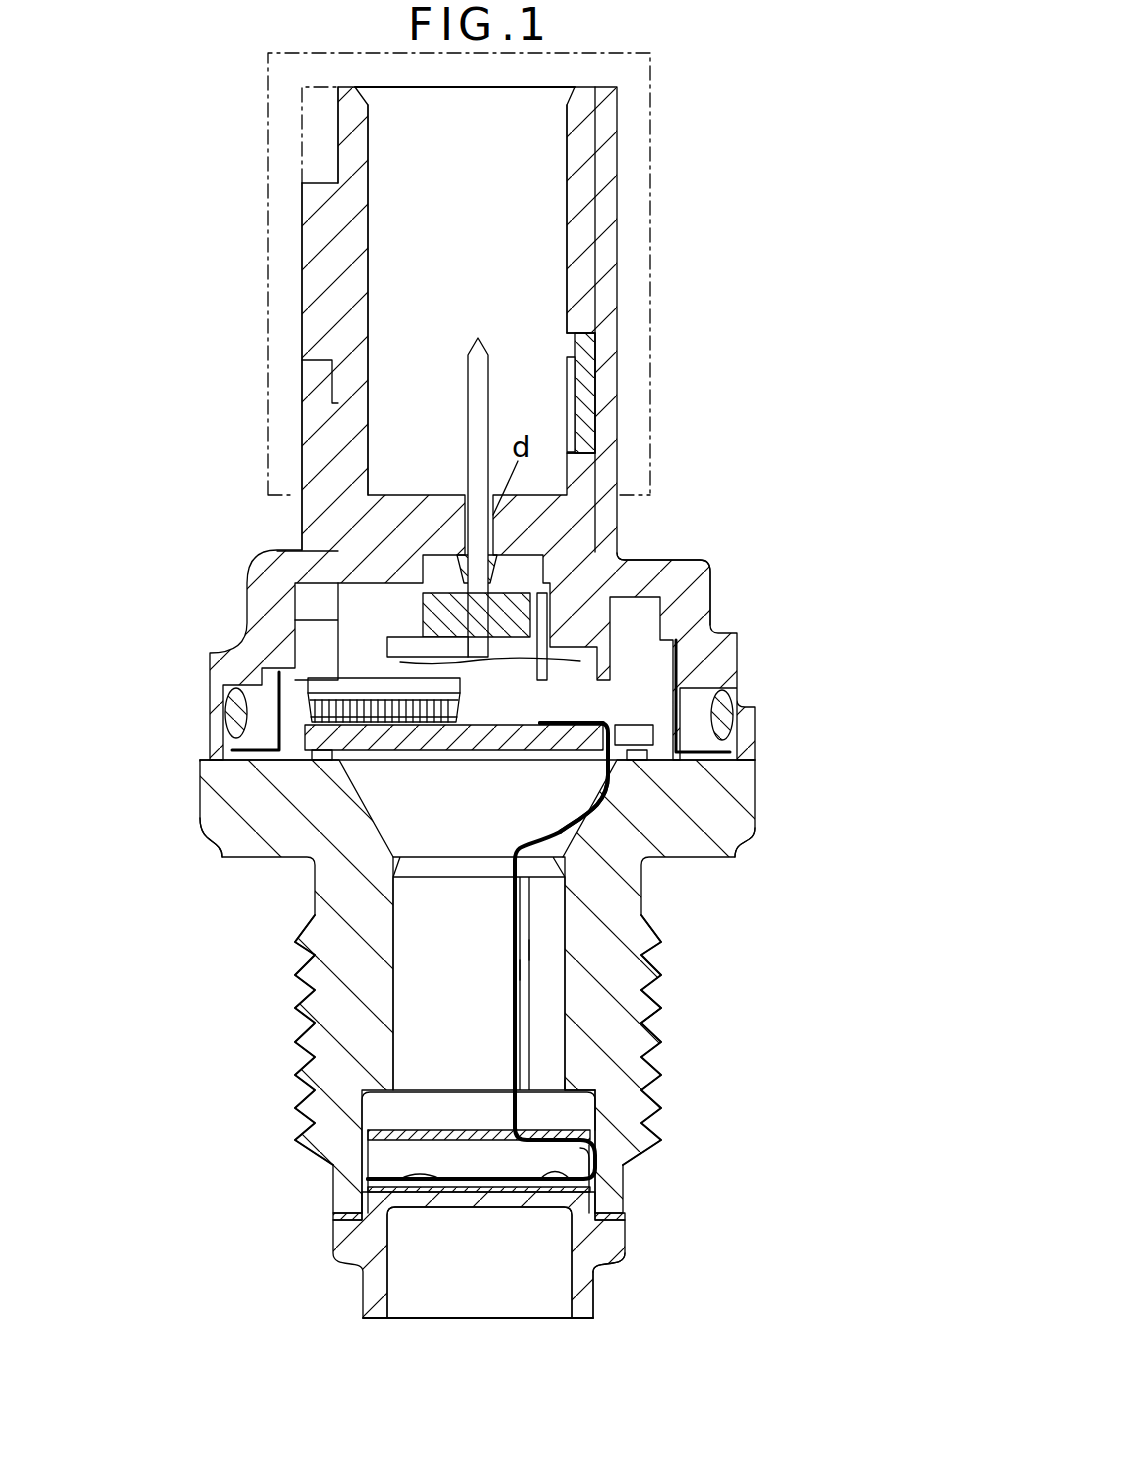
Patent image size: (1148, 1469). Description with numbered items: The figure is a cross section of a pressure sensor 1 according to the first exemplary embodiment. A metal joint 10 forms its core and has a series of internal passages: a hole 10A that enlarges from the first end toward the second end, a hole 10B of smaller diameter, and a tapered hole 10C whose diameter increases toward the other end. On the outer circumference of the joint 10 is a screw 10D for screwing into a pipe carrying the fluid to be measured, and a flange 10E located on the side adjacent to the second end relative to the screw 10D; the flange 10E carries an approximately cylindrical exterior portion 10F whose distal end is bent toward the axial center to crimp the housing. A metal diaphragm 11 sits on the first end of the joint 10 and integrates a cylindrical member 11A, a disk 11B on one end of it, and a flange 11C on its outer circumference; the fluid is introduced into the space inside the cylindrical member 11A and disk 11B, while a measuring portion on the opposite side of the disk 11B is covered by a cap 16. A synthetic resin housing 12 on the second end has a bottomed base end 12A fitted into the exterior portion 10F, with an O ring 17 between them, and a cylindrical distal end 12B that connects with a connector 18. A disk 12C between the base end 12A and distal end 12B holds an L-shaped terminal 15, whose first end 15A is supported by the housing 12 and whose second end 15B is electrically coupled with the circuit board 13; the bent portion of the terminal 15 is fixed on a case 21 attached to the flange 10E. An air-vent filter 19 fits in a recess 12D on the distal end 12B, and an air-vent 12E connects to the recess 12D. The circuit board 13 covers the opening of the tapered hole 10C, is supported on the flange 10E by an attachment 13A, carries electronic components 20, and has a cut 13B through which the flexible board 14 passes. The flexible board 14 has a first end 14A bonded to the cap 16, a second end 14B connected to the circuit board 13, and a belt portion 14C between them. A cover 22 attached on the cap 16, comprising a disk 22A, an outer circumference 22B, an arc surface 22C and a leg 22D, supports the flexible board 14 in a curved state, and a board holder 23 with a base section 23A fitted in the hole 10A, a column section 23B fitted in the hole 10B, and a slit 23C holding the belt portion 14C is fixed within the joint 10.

The pressure sensor 1 is at (768, 147).
The joint 10 is at (245, 868).
The hole 10A is at (600, 1118).
The hole 10B is at (560, 1006).
The tapered hole 10C is at (655, 865).
The screw 10D is at (297, 1022).
The flange 10E is at (207, 823).
The exterior portion 10F is at (225, 665).
The diaphragm 11 is at (345, 1269).
The cylindrical member 11A is at (596, 1292).
The disk 11B is at (511, 1200).
The flange 11C is at (621, 1240).
The housing 12 is at (243, 560).
The base end 12A is at (700, 598).
The distal end 12B is at (575, 263).
The disk 12C is at (393, 500).
The recess 12D is at (597, 328).
The air-vent 12E is at (569, 385).
The circuit board 13 is at (521, 741).
The attachment 13A is at (334, 756).
The cut 13B is at (640, 735).
The flexible board 14 is at (508, 838).
The first end 14A is at (452, 1183).
The second end 14B is at (560, 718).
The belt portion 14C is at (570, 822).
The terminal 15 is at (501, 355).
The first end 15A is at (470, 482).
The second end 15B is at (406, 641).
The cap 16 is at (466, 1190).
The O ring 17 is at (731, 718).
The connector 18 is at (655, 232).
The air-vent filter 19 is at (597, 390).
The electronic components 20 is at (340, 680).
The case 21 is at (636, 630).
The cover 22 is at (422, 1118).
The disk 22A is at (452, 1135).
The outer circumference 22B is at (360, 1150).
The arc surface 22C is at (535, 1163).
The leg 22D is at (600, 1184).
The board holder 23 is at (422, 880).
The base section 23A is at (580, 1108).
The column section 23B is at (556, 945).
The slit 23C is at (528, 965).